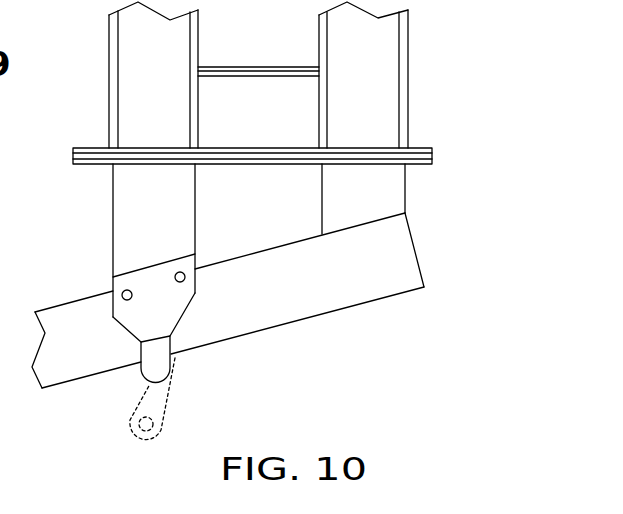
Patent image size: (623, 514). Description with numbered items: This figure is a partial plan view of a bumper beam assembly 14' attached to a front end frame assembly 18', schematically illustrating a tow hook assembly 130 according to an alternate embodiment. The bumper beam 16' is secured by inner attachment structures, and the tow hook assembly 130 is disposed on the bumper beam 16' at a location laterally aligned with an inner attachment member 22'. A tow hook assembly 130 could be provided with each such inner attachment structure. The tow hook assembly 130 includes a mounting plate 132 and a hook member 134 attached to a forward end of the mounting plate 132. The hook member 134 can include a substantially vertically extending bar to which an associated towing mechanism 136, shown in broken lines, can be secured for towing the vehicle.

The bumper beam assembly 14' is at (288, 121).
The bumper beam 16' is at (228, 300).
The post 18' is at (304, 118).
The inner attachment member 22' is at (99, 240).
The tow hook assembly 130 is at (152, 334).
The mounting plate 132 is at (160, 305).
The hook member 134 is at (138, 358).
The towing mechanism 136 is at (143, 440).